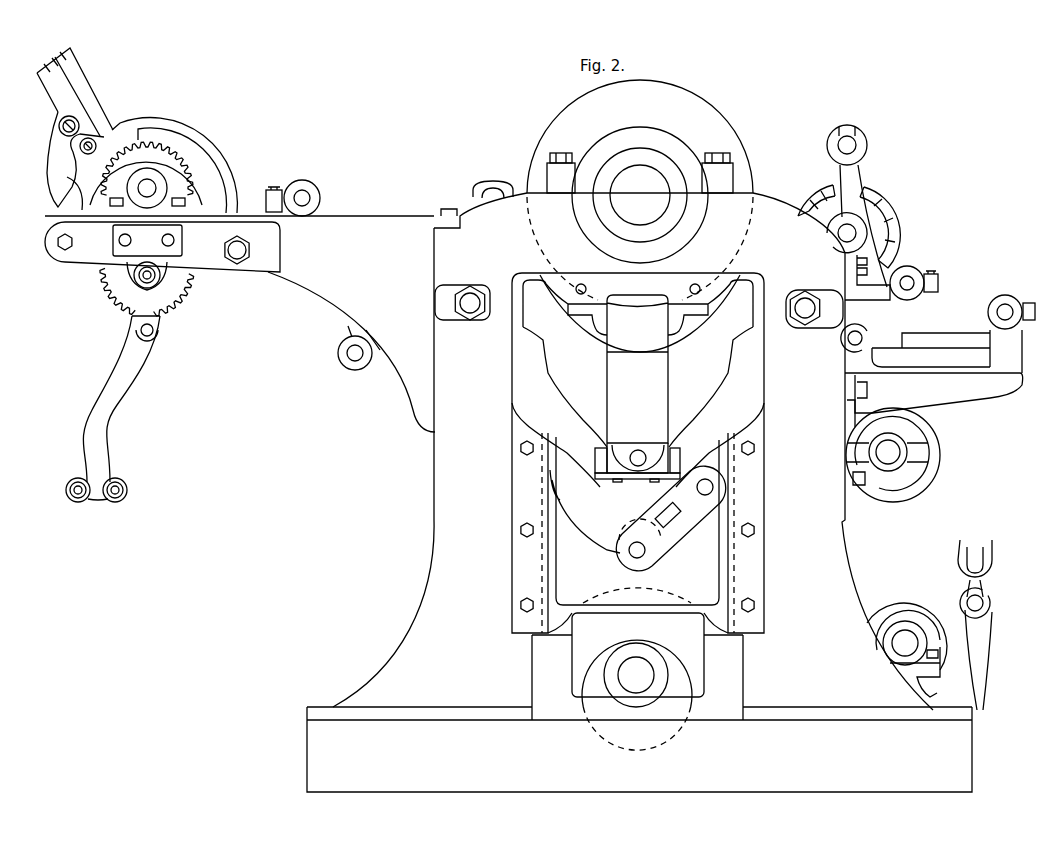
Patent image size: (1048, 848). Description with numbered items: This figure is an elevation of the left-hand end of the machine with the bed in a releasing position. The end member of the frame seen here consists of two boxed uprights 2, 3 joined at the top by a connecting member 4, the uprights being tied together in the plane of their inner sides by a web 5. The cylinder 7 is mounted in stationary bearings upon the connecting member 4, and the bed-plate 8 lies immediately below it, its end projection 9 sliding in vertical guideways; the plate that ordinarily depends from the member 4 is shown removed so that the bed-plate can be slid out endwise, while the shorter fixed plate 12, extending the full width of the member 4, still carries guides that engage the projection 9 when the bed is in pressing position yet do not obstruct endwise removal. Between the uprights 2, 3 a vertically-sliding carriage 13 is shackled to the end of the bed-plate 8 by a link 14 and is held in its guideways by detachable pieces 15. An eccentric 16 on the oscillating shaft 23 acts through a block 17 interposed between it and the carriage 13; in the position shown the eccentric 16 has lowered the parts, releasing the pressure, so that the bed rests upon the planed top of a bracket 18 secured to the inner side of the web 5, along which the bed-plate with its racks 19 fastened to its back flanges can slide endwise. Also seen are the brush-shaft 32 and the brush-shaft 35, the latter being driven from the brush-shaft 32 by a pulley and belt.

The boxed upright 2 is at (282, 377).
The boxed upright 3 is at (894, 417).
The connecting member 4 is at (640, 248).
The web 5 is at (585, 511).
The cylinder 7 is at (640, 171).
The bed-plate 8 is at (638, 380).
The end projection 9 is at (637, 384).
The shorter plate 12 is at (598, 322).
The vertically-sliding carriage 13 is at (637, 521).
The link 14 is at (652, 508).
The detachable piece 15 is at (638, 518).
The eccentric 16 is at (637, 695).
The block 17 is at (638, 655).
The bracket 18 is at (619, 480).
The rack 19 is at (598, 455).
The oscillating shaft 23 is at (636, 675).
The brush-shaft 32 is at (847, 453).
The brush-shaft 35 is at (903, 645).